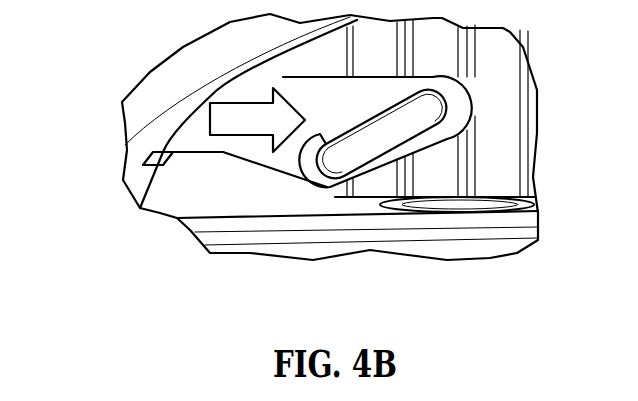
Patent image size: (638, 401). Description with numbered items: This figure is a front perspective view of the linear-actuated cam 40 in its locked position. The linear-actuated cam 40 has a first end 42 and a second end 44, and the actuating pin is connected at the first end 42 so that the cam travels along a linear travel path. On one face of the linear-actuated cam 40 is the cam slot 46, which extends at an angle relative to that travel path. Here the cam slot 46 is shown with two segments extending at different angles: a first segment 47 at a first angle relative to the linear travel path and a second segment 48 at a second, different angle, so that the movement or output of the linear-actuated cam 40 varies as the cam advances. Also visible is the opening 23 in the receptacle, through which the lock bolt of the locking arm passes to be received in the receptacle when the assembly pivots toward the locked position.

The opening 23 is at (480, 207).
The linear-actuated cam 40 is at (285, 163).
The first end 42 is at (193, 133).
The second end 44 is at (450, 105).
The cam slot 46 is at (377, 137).
The first segment 47 is at (330, 155).
The second segment 48 is at (422, 103).